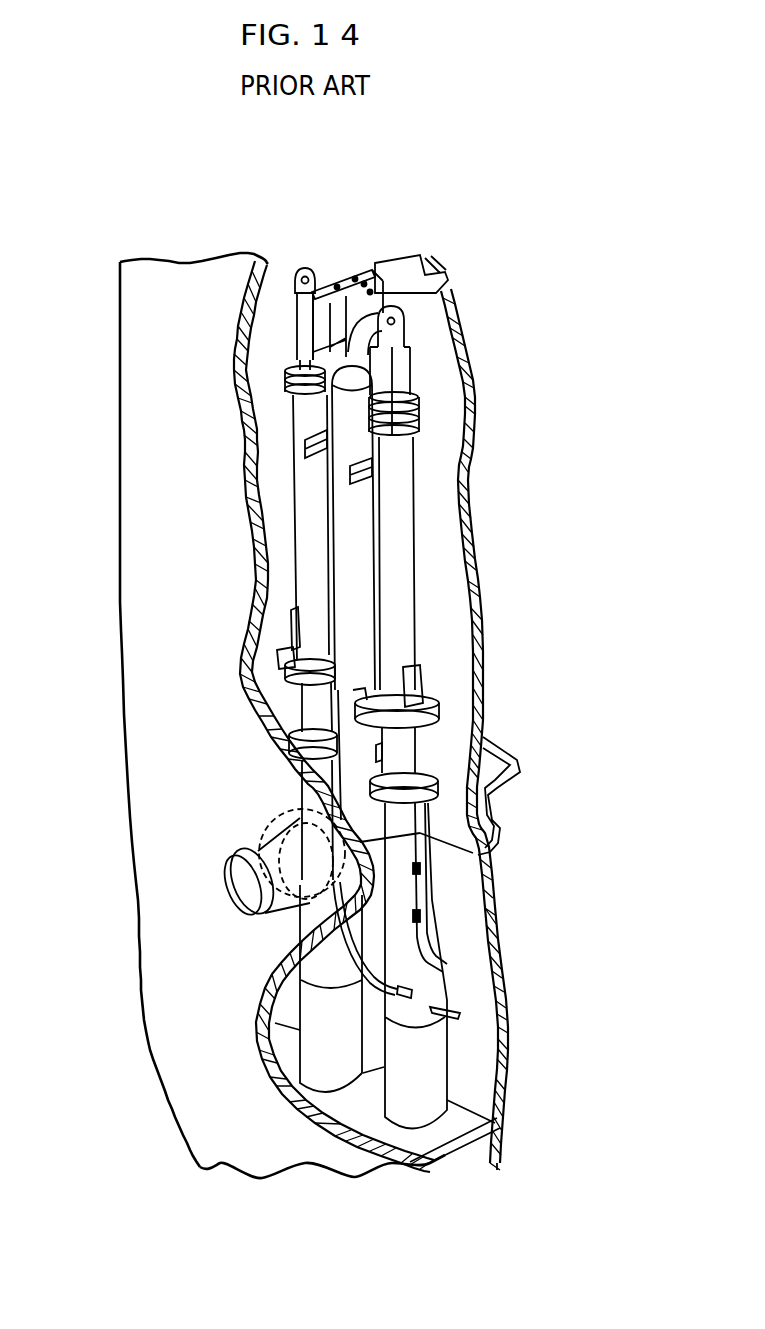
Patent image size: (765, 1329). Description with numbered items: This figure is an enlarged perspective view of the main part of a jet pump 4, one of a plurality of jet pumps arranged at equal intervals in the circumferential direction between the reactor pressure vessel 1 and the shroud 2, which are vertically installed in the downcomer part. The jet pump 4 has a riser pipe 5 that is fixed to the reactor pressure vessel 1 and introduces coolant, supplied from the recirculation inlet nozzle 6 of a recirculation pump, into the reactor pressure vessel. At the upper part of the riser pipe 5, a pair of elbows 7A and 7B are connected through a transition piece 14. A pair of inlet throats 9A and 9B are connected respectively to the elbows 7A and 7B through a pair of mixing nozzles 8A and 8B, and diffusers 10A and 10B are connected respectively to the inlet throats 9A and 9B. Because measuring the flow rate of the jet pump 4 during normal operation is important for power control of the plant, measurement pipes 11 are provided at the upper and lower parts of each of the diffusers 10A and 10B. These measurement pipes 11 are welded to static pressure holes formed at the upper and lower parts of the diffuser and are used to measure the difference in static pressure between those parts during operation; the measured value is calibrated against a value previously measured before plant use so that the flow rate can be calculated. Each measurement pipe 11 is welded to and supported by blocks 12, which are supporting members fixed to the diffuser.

The reactor pressure vessel 1 is at (120, 443).
The shroud 2 is at (483, 708).
The jet pump 4 is at (439, 663).
The riser pipe 5 is at (355, 587).
The recirculation inlet nozzle 6 is at (273, 860).
The elbow 7A is at (297, 294).
The elbow 7B is at (390, 353).
The mixing nozzle 8A is at (287, 368).
The mixing nozzle 8B is at (403, 402).
The inlet throat 9A is at (307, 525).
The inlet throat 9B is at (400, 553).
The diffuser 10A is at (300, 932).
The diffuser 10B is at (427, 907).
The measurement pipe 11 is at (457, 1015).
The block 12 is at (420, 870).
The transition piece 14 is at (297, 328).